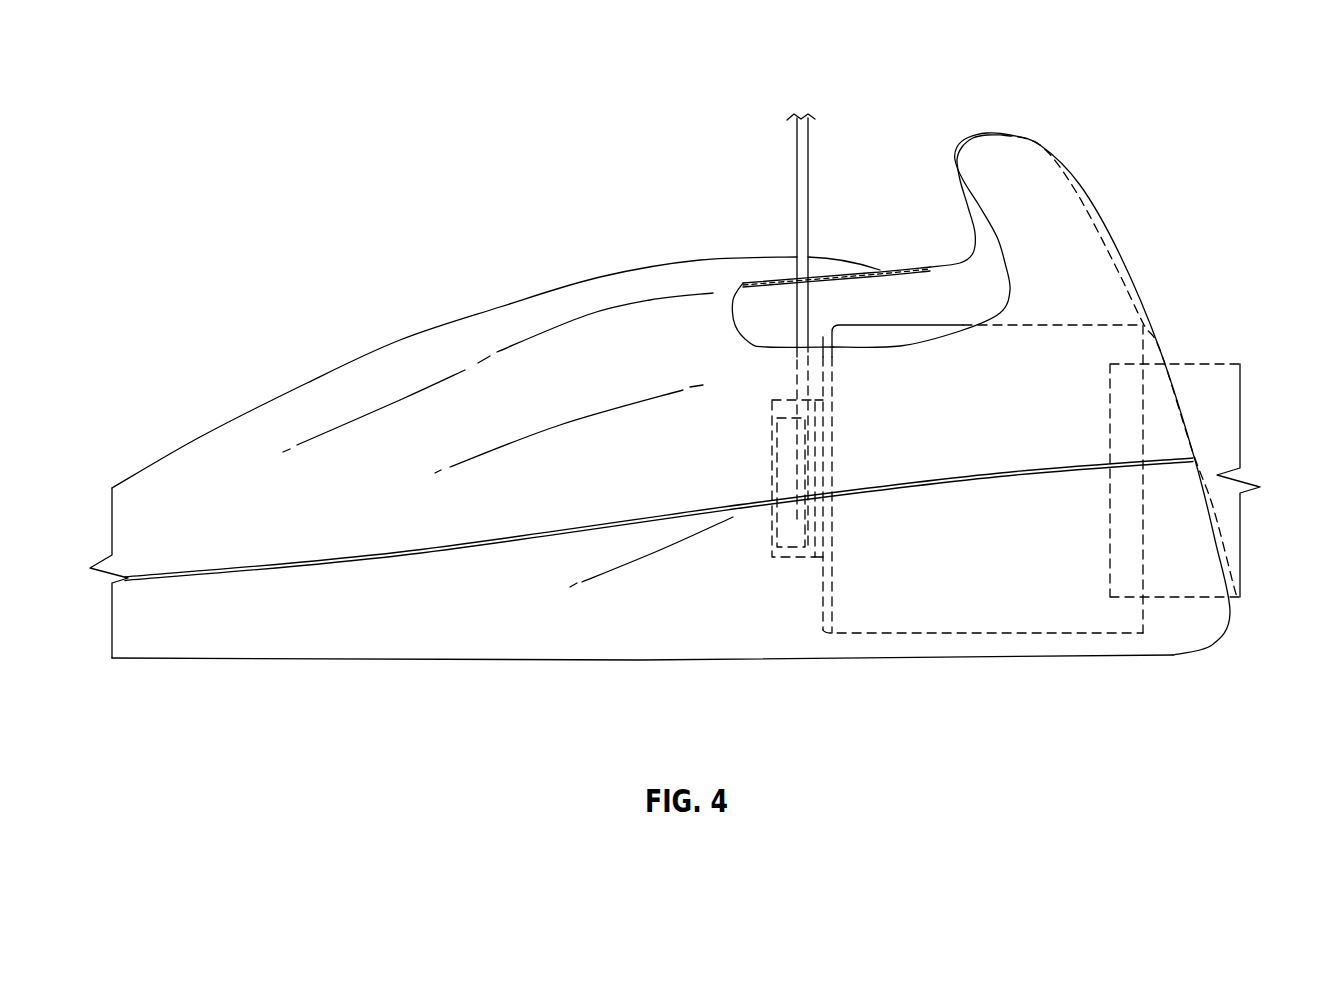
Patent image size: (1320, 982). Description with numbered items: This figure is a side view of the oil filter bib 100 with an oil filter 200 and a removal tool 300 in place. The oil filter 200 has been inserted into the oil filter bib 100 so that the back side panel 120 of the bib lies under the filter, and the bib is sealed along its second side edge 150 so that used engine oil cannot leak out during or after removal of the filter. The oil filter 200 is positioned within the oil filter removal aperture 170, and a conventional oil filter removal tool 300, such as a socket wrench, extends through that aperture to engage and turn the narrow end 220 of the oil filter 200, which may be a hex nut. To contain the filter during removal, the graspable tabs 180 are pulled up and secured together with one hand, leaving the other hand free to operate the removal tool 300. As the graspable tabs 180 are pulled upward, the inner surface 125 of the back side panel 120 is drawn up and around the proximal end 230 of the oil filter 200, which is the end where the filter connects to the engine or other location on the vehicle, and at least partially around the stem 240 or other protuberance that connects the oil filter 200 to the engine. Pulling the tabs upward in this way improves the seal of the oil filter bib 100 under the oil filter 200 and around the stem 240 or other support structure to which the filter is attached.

The oil filter bib 100 is at (636, 210).
The back side panel 120 is at (800, 663).
The inner surface 125 is at (873, 290).
The second side edge 150 is at (397, 558).
The oil filter removal aperture 170 is at (772, 278).
The graspable tabs 180 is at (965, 205).
The oil filter 200 is at (940, 610).
The narrow end 220 is at (832, 463).
The proximal end 230 is at (1138, 612).
The stem 240 is at (1203, 363).
The oil filter removal tool 300 is at (803, 200).